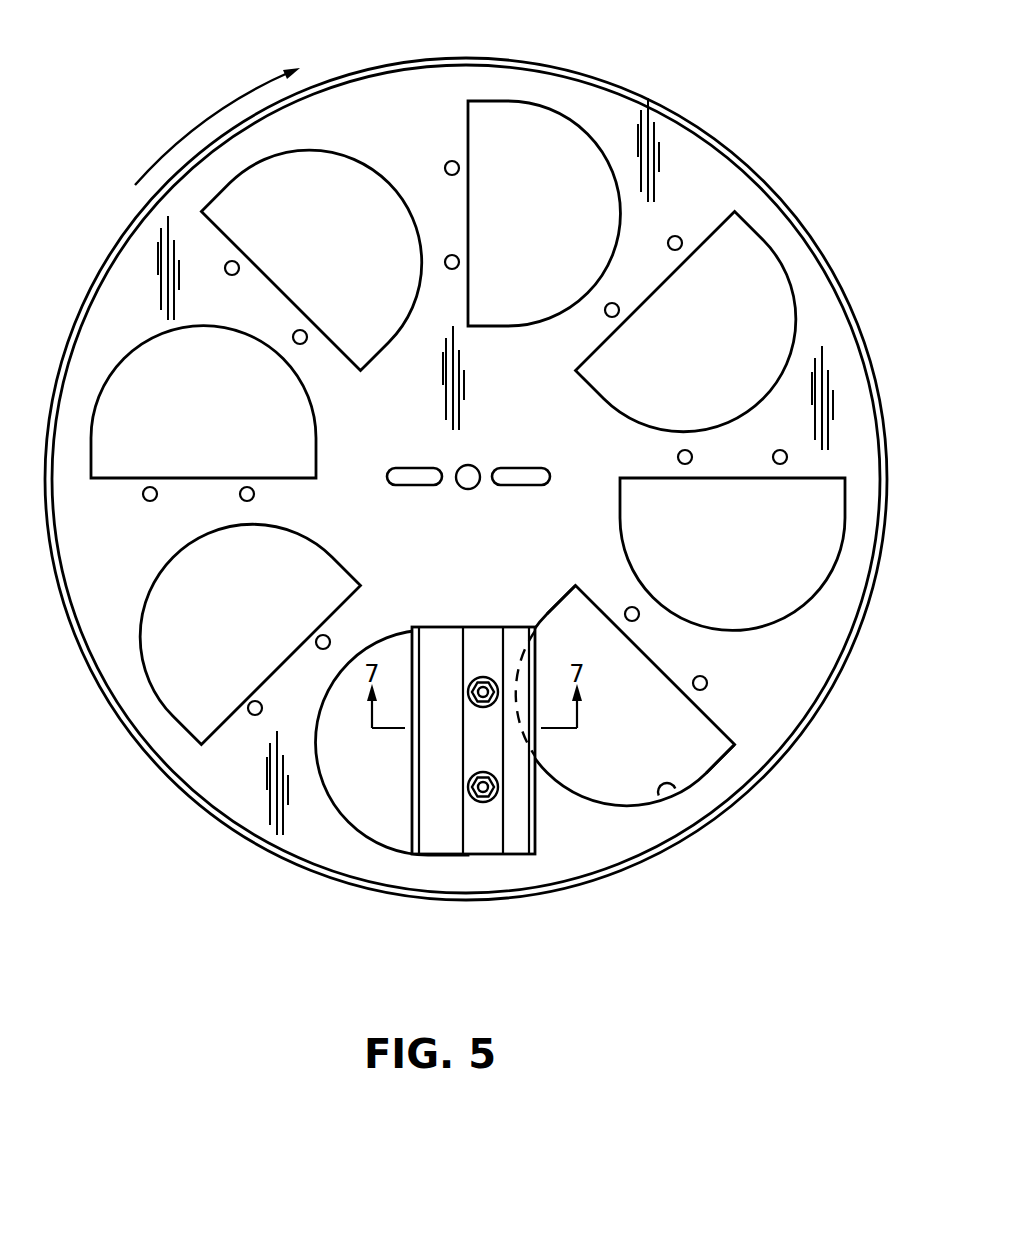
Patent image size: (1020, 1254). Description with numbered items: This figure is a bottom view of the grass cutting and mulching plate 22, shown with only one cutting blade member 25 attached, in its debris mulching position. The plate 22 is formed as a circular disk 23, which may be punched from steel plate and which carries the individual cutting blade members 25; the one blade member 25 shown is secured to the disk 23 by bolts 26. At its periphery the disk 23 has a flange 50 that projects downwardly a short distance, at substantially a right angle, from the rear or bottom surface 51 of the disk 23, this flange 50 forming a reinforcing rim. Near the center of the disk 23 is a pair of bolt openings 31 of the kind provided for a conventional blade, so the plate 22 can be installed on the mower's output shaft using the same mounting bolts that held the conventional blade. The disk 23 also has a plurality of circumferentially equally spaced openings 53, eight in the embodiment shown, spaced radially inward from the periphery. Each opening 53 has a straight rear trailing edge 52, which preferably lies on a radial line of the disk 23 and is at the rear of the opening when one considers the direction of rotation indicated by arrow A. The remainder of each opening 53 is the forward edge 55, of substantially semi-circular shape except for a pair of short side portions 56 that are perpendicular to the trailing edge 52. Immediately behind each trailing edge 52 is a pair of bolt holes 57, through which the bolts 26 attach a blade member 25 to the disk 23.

The grass cutting and mulching plate 22 is at (721, 128).
The flange 50 is at (760, 170).
The bottom surface 51 is at (107, 613).
The circular disk 23 is at (778, 230).
The trailing edge 52 is at (722, 728).
The openings 53 is at (328, 180).
The forward edge 55 is at (677, 790).
The side portions 56 is at (558, 603).
The bolt holes 57 is at (329, 637).
The cutting blade member 25 is at (442, 810).
The bolts 26 is at (483, 677).
The bolt openings 31 is at (517, 468).
The arrow A is at (224, 108).